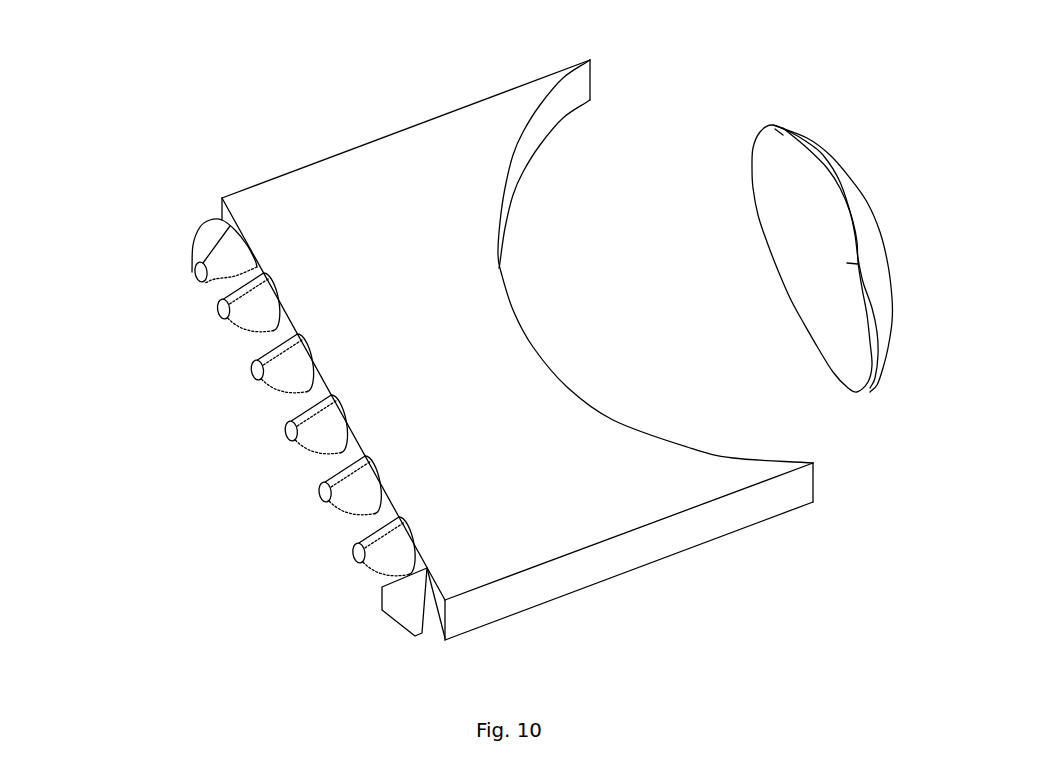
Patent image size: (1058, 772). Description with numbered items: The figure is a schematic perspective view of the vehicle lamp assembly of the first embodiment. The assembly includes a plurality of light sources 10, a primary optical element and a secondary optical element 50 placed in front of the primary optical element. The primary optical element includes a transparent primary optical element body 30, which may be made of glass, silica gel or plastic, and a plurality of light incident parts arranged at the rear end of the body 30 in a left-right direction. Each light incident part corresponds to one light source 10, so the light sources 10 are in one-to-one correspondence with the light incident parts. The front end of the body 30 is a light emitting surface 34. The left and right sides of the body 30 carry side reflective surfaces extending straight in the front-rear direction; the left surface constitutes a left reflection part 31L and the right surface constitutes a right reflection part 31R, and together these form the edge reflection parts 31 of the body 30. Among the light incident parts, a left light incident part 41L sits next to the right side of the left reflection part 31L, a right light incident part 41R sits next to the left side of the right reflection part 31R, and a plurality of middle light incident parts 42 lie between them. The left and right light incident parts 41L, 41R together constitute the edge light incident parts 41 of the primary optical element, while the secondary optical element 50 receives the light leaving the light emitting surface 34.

The light source 10 is at (217, 311).
The primary optical element body 30 is at (492, 332).
The edge reflection parts 31 is at (517, 321).
The left reflection part 31L is at (468, 105).
The right reflection part 31R is at (600, 563).
The light emitting surface 34 is at (530, 152).
The edge light incident parts 41 is at (245, 432).
The left light incident part 41L is at (210, 238).
The right light incident part 41R is at (405, 603).
The middle light incident parts 42 is at (313, 428).
The secondary optical element 50 is at (835, 195).